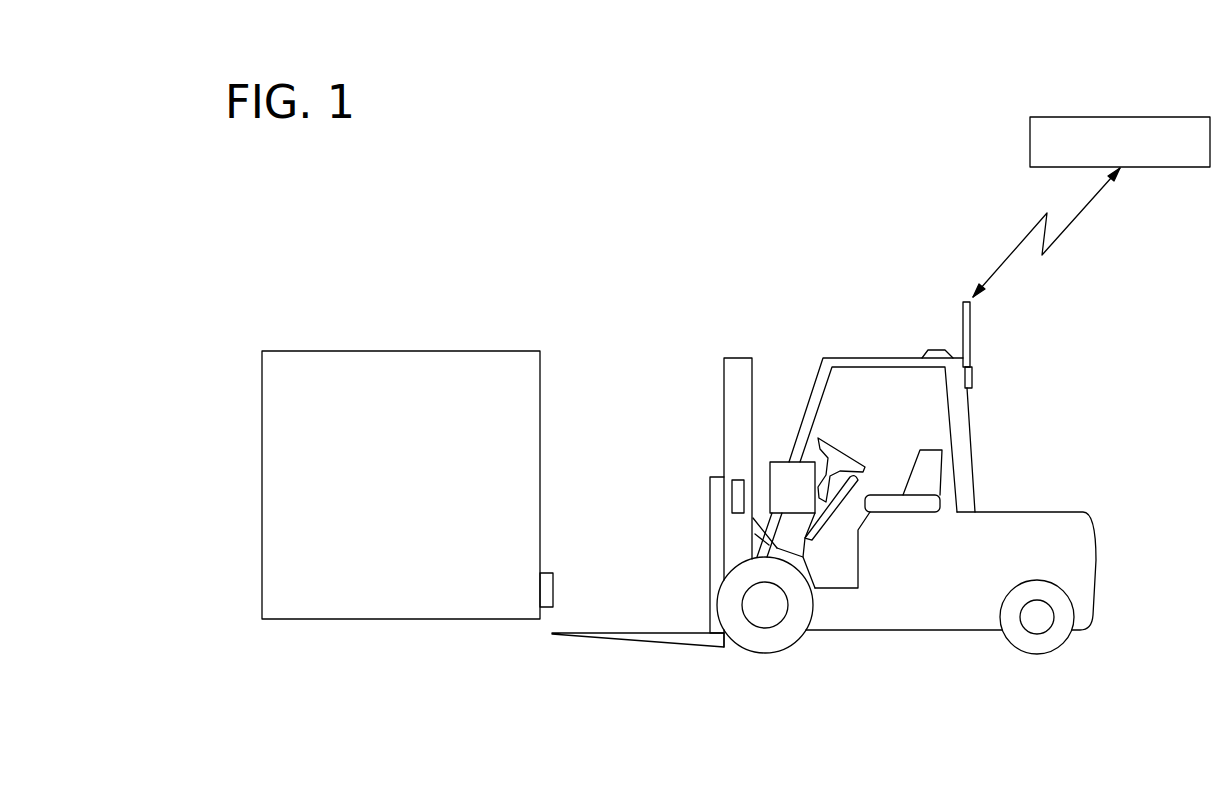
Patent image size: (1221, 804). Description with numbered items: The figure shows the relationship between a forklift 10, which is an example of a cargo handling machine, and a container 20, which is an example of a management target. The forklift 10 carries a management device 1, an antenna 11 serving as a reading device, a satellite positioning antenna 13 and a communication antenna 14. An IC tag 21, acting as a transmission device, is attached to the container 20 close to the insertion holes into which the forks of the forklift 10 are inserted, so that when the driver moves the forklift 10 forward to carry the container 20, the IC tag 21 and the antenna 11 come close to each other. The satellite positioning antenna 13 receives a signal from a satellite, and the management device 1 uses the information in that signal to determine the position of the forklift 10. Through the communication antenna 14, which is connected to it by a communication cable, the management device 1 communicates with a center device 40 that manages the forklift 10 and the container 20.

The management device 1 is at (783, 462).
The forklift 10 is at (912, 630).
The antenna 11 is at (732, 498).
The satellite positioning antenna 13 is at (938, 350).
The communication antenna 14 is at (972, 326).
The container 20 is at (360, 351).
The IC tag 21 is at (537, 589).
The center device 40 is at (1157, 117).